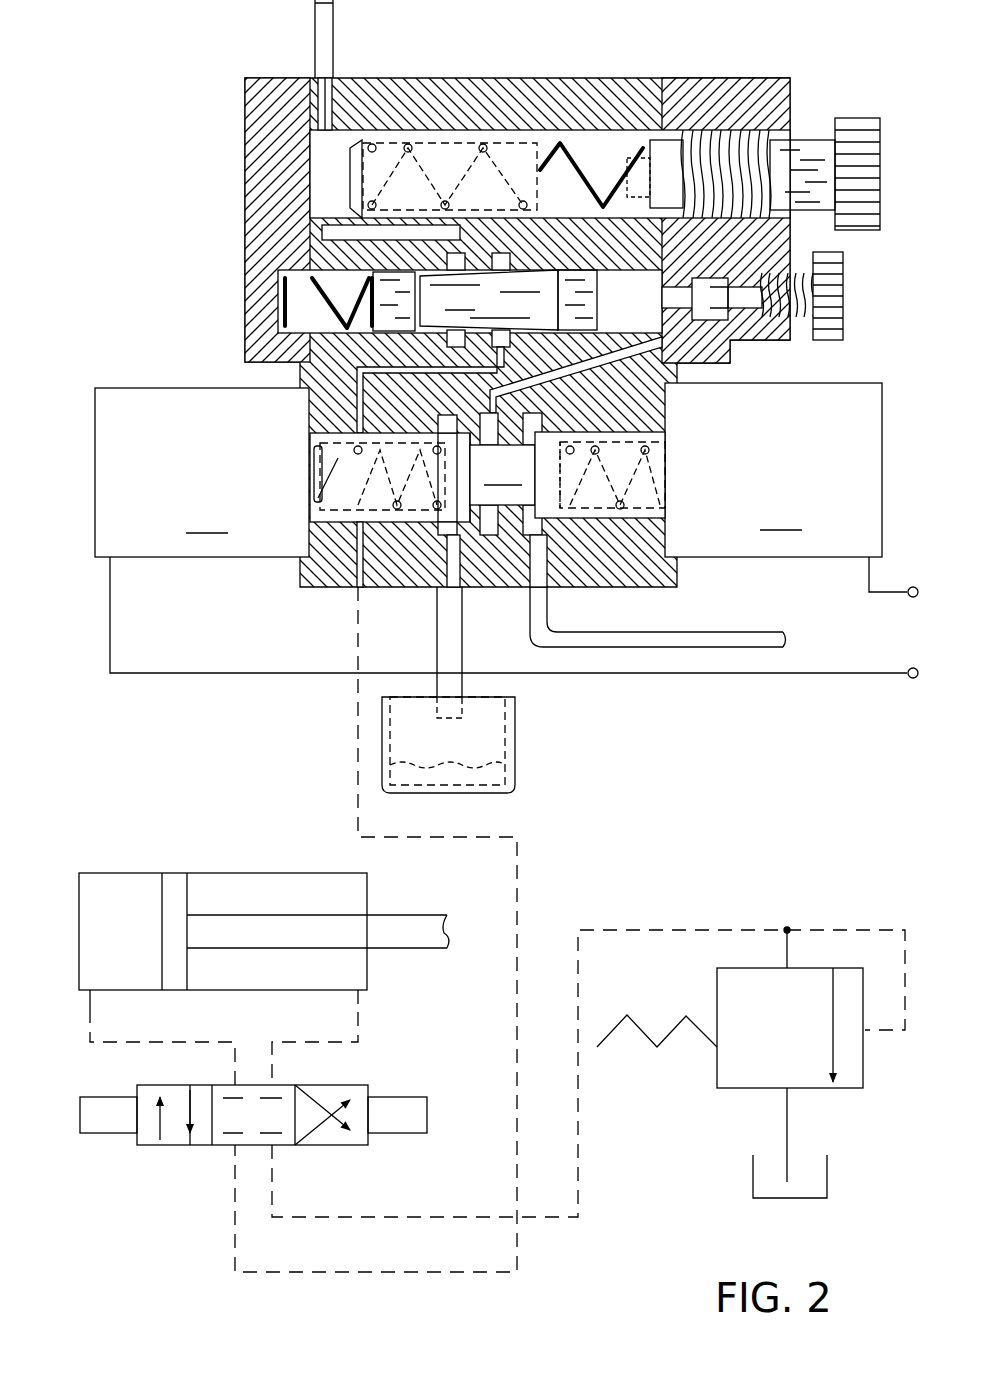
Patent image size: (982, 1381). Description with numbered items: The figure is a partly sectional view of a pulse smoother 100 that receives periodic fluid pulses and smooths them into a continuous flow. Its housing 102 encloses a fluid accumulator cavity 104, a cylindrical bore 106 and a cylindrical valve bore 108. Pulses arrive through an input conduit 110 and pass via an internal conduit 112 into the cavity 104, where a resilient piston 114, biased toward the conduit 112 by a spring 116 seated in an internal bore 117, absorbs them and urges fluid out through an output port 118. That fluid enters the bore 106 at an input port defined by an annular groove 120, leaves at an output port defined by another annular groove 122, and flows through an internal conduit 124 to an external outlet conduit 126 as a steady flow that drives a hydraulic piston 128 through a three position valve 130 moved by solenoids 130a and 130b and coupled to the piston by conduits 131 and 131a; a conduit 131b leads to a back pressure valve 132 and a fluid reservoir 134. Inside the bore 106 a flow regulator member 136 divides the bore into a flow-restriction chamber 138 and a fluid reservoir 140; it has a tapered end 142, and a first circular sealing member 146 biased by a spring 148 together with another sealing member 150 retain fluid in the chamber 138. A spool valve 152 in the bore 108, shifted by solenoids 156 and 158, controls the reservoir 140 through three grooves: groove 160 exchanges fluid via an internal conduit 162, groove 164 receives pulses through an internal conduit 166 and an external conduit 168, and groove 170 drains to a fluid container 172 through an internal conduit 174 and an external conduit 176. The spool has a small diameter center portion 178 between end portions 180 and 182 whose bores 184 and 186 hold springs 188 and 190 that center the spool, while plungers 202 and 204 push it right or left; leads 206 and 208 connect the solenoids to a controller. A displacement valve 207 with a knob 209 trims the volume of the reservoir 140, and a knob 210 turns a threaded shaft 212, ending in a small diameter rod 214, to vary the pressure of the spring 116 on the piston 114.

The pulse smoother 100 is at (238, 236).
The housing 102 is at (544, 78).
The fluid accumulator cavity 104 is at (334, 142).
The cylindrical bore 106 is at (440, 333).
The cylindrical valve bore 108 is at (510, 560).
The input conduit 110 is at (316, 40).
The internal conduit 112 is at (310, 92).
The resilient piston 114 is at (352, 158).
The spring 116 is at (455, 170).
The internal bore 117 is at (510, 142).
The output port 118 is at (385, 240).
The annular groove 120 is at (465, 255).
The annular groove 122 is at (507, 345).
The internal conduit 124 is at (448, 390).
The outlet conduit 126 is at (358, 642).
The hydraulic piston 128 is at (194, 892).
The three position valve 130 is at (220, 1145).
The solenoid 130a is at (95, 1133).
The solenoid 130b is at (402, 1133).
The conduit 131 is at (98, 1030).
The conduit 131a is at (349, 1030).
The conduit 131b is at (667, 930).
The back pressure valve 132 is at (852, 1090).
The fluid reservoir 134 is at (828, 1172).
The flow regulator member 136 is at (520, 312).
The flow-restriction chamber 138 is at (449, 301).
The fluid reservoir 140 is at (640, 272).
The tapered end 142 is at (427, 274).
The first circular sealing member 146 is at (383, 333).
The spring 148 is at (282, 294).
The circular sealing member 150 is at (571, 333).
The spool valve 152 is at (460, 538).
The solenoid 156 is at (202, 472).
The solenoid 158 is at (773, 470).
The groove 160 is at (496, 417).
The internal conduit 162 is at (628, 380).
The groove 164 is at (543, 418).
The internal conduit 166 is at (528, 592).
The external conduit 168 is at (634, 640).
The groove 170 is at (452, 414).
The fluid container 172 is at (517, 742).
The internal conduit 174 is at (438, 590).
The external conduit 176 is at (436, 645).
The small diameter center portion 178 is at (502, 475).
The end portion 180 is at (438, 527).
The end portion 182 is at (616, 520).
The bore 184 is at (410, 442).
The bore 186 is at (621, 442).
The spring 188 is at (348, 448).
The spring 190 is at (613, 474).
The plunger 202 is at (375, 508).
The plunger 204 is at (606, 514).
The lead 206 is at (832, 676).
The manually adjustable displacement valve 207 is at (717, 290).
The lead 208 is at (894, 596).
The manually adjustable knob 209 is at (842, 290).
The manually adjustable knob 210 is at (857, 118).
The threaded shaft 212 is at (763, 151).
The small diameter rod 214 is at (610, 162).